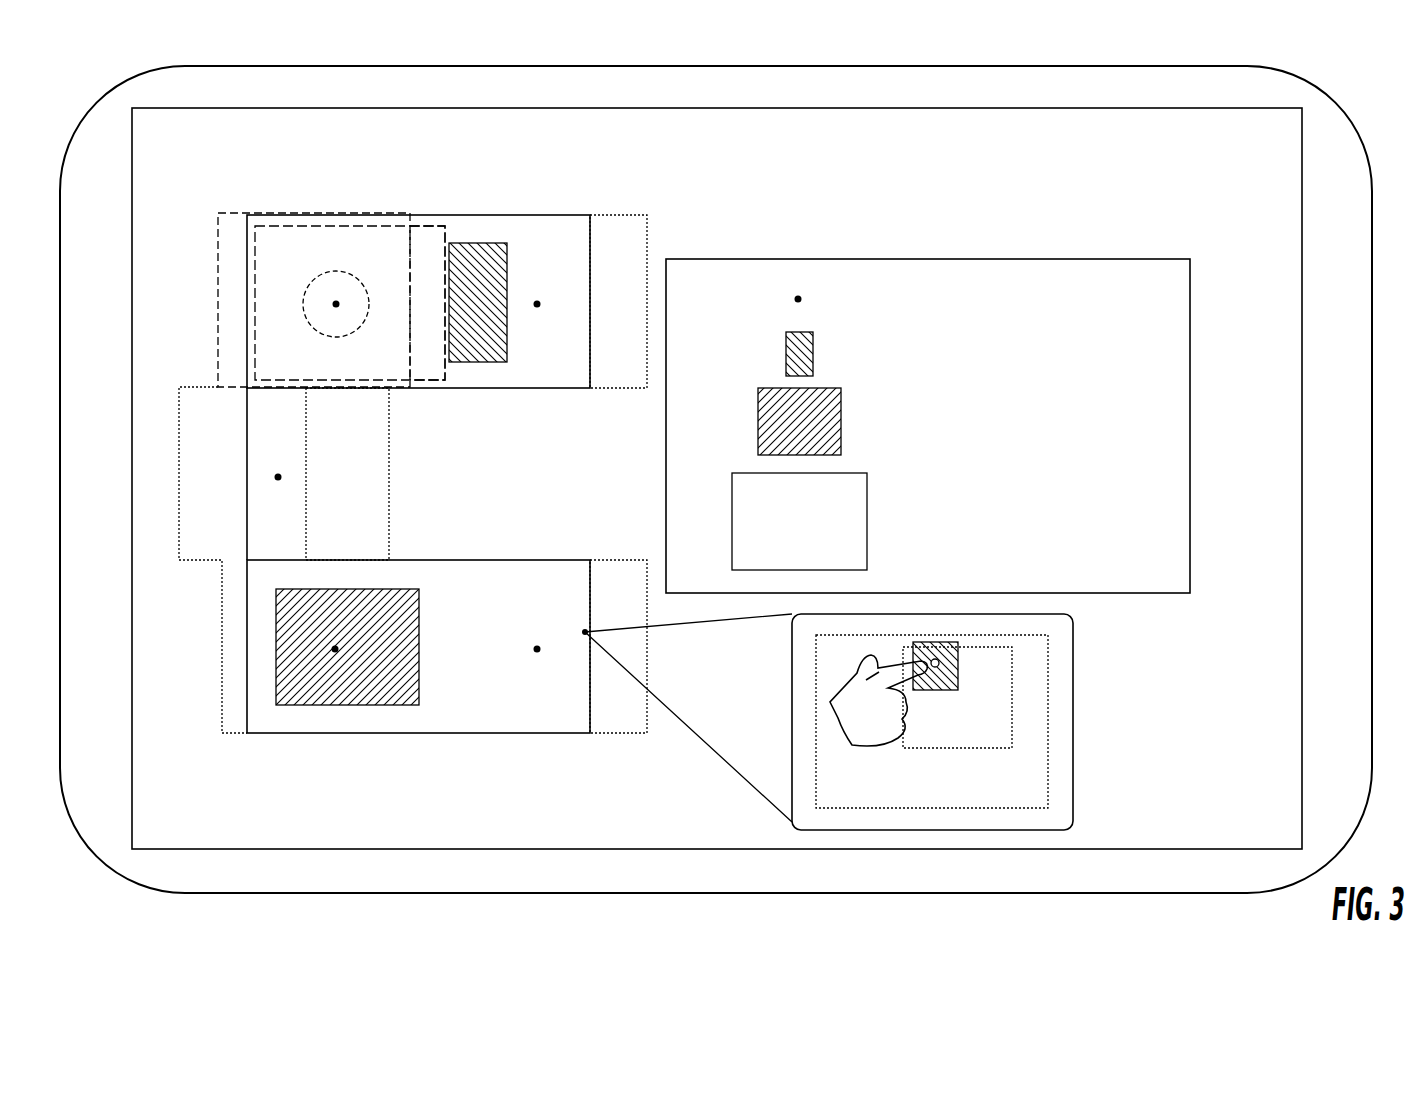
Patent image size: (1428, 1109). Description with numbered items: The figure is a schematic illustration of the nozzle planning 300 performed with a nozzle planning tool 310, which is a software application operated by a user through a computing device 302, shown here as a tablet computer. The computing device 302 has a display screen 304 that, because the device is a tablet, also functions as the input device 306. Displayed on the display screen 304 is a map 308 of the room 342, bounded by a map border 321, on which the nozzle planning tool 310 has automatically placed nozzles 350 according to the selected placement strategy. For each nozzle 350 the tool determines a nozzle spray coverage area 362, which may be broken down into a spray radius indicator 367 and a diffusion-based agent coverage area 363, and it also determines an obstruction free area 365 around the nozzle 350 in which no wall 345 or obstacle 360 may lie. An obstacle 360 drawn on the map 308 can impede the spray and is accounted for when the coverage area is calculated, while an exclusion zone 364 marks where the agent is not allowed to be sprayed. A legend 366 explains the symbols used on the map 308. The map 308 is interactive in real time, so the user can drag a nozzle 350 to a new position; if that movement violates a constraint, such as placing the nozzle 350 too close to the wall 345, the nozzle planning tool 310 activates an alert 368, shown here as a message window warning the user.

The nozzle planning 300 is at (70, 105).
The computing device 302 is at (1297, 80).
The display screen 304 is at (1118, 133).
The input device 306 is at (985, 128).
The map 308 is at (238, 266).
The nozzle planning tool 310 is at (255, 134).
The map boundary 321 is at (666, 106).
The room 342 is at (434, 725).
The wall 345 is at (240, 418).
The nozzle 350 is at (583, 630).
The obstacle 360 is at (492, 243).
The nozzle spray coverage area 362 is at (352, 224).
The agent coverage area 363 is at (217, 356).
The exclusion zone 364 is at (343, 703).
The obstruction free area 365 is at (428, 224).
The legend 366 is at (935, 261).
The nozzle spray radius indicator 367 is at (334, 271).
The alert 368 is at (1073, 660).